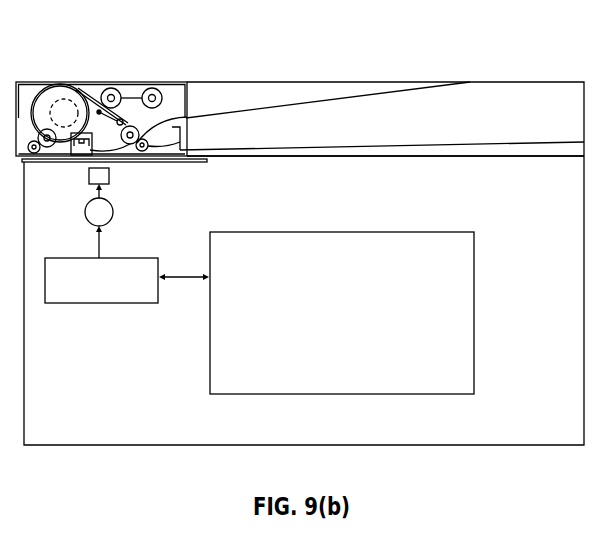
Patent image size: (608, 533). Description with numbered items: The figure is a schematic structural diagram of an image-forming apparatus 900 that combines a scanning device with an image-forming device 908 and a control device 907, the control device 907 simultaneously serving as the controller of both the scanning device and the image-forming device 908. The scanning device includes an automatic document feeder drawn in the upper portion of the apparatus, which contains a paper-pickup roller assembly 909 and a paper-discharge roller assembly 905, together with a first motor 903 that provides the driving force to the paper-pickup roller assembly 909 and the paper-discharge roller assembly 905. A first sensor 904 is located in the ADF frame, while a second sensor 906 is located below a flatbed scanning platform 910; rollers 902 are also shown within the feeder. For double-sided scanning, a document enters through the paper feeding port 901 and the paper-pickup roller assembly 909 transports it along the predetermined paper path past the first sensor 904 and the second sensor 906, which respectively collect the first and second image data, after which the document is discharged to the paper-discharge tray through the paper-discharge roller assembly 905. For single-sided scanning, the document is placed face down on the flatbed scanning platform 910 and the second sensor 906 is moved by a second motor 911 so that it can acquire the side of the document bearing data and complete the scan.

The image-forming apparatus 900 is at (495, 39).
The paper feeding port 901 is at (203, 114).
The guide rollers 902 is at (152, 88).
The first motor 903 is at (57, 99).
The first sensor 904 is at (84, 133).
The paper-discharge roller assembly 905 is at (180, 142).
The second sensor 906 is at (90, 180).
The control device 907 is at (72, 304).
The image-forming device 908 is at (210, 365).
The paper-pickup roller assembly 909 is at (258, 149).
The flatbed scanning platform 910 is at (398, 156).
The second motor 911 is at (89, 223).